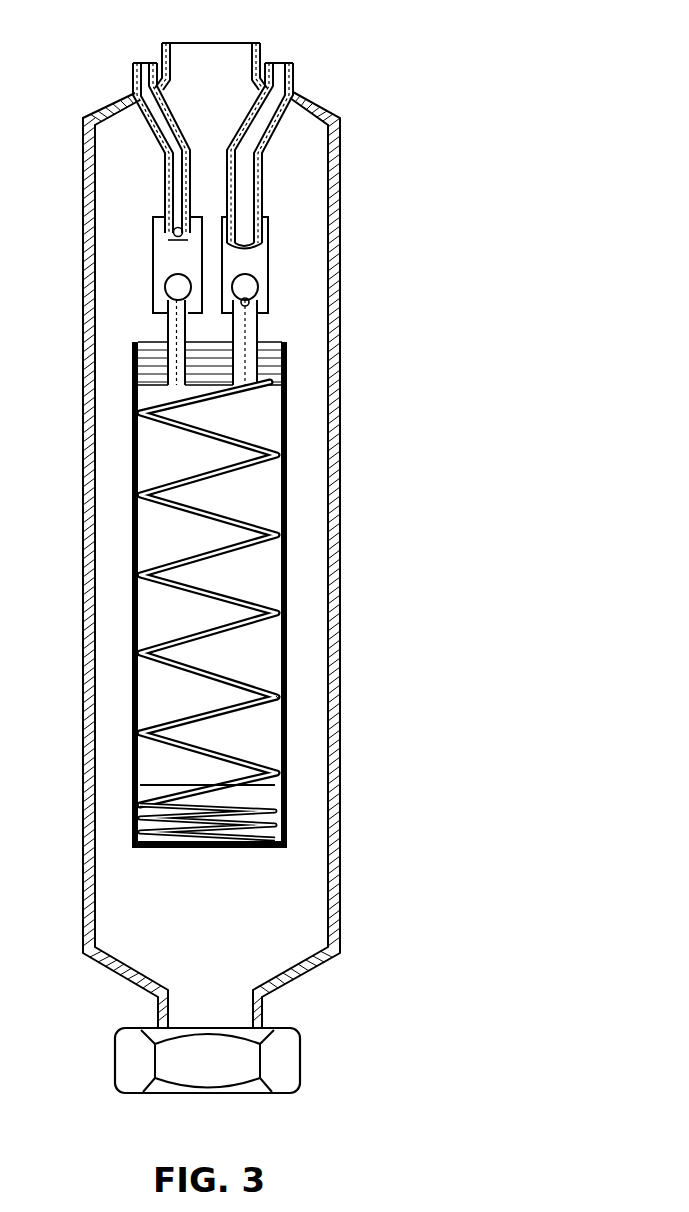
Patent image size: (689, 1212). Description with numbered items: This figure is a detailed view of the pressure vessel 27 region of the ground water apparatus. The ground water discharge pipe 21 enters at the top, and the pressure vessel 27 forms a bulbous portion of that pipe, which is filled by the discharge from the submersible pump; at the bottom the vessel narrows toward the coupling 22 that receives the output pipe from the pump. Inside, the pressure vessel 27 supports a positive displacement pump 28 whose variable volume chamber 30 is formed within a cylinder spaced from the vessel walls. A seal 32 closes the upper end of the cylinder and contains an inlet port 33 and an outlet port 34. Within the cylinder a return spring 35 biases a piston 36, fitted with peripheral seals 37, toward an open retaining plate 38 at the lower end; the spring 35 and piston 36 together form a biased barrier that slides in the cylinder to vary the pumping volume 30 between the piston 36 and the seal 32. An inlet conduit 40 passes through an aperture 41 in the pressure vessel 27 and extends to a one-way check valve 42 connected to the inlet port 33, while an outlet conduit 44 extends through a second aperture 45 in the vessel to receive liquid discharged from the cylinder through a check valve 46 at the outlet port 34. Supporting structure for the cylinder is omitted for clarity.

The ground water discharge pipe 21 is at (236, 44).
The coupling 22 is at (300, 1068).
The pressure vessel 27 is at (338, 319).
The positive displacement pump 28 is at (292, 620).
The variable volume chamber 30 is at (254, 578).
The seal 32 is at (149, 340).
The inlet port 33 is at (254, 334).
The outlet port 34 is at (169, 343).
The return spring 35 is at (263, 684).
The piston 36 is at (270, 801).
The peripheral seals 37 is at (283, 849).
The open retaining plate 38 is at (223, 850).
The inlet conduit 40 is at (292, 74).
The aperture 41 is at (300, 98).
The one-way check valve 42 is at (271, 256).
The outlet conduit 44 is at (142, 66).
The second aperture 45 is at (133, 96).
The check valve 46 is at (152, 246).